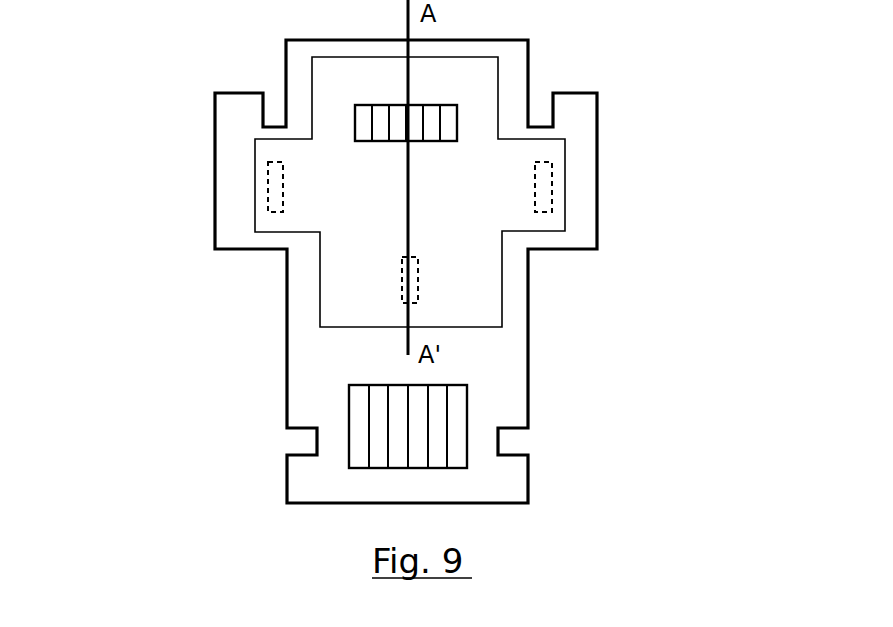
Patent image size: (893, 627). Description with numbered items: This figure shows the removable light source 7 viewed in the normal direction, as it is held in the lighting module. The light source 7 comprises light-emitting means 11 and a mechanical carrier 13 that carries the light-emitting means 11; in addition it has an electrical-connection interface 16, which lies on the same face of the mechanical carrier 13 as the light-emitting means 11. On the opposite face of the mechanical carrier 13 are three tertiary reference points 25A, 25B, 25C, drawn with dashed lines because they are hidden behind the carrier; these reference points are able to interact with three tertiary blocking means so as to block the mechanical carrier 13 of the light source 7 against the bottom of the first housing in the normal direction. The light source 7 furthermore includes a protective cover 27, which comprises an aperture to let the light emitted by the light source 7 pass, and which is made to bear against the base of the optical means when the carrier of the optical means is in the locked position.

The light source 7 is at (156, 110).
The light-emitting means 11 is at (453, 118).
The mechanical carrier 13 is at (483, 216).
The electrical-connection interface 16 is at (457, 413).
The tertiary reference point 25A is at (265, 193).
The tertiary reference point 25B is at (418, 281).
The tertiary reference point 25C is at (552, 195).
The protective cover 27 is at (566, 147).